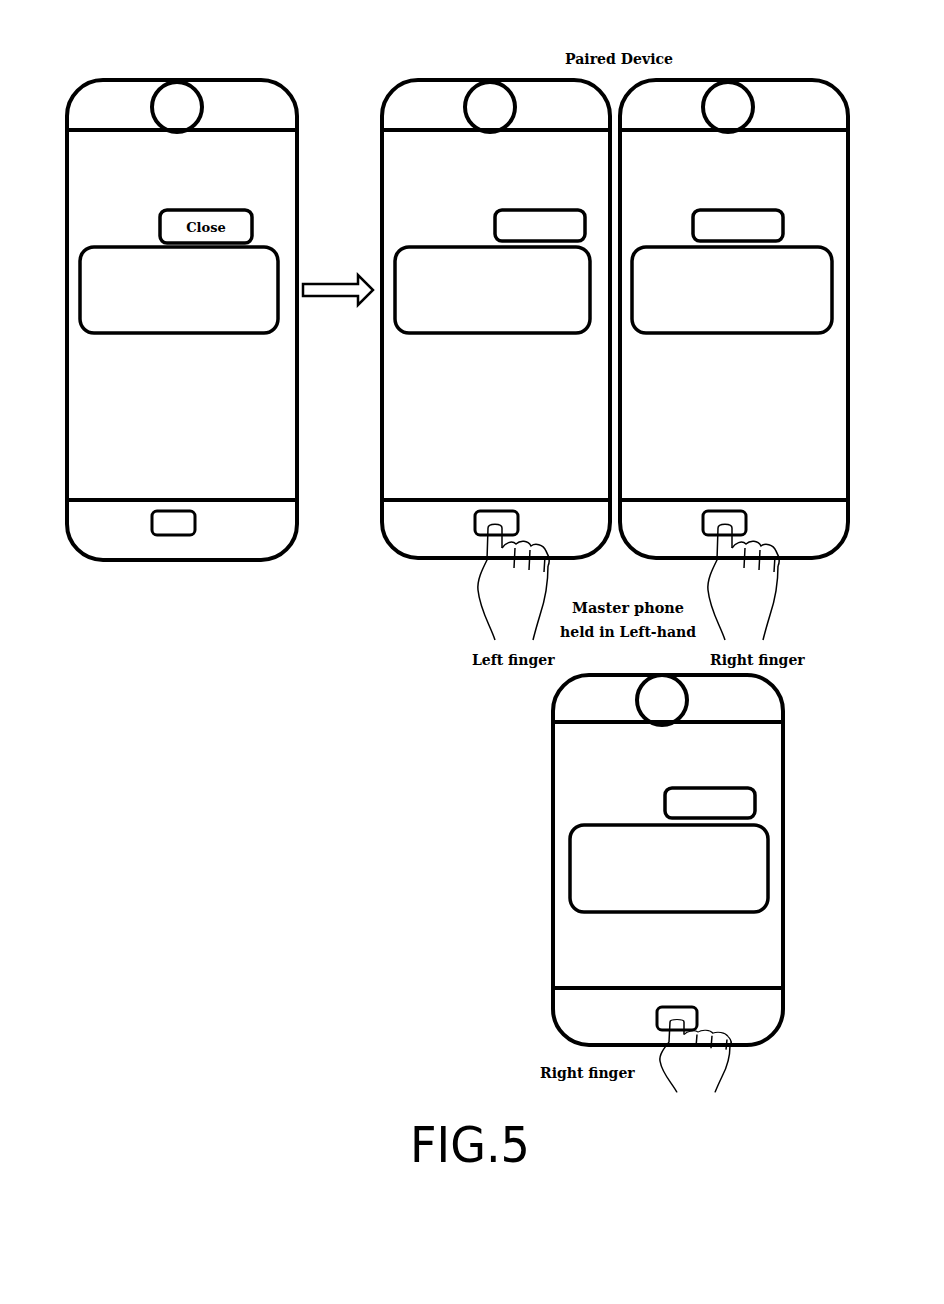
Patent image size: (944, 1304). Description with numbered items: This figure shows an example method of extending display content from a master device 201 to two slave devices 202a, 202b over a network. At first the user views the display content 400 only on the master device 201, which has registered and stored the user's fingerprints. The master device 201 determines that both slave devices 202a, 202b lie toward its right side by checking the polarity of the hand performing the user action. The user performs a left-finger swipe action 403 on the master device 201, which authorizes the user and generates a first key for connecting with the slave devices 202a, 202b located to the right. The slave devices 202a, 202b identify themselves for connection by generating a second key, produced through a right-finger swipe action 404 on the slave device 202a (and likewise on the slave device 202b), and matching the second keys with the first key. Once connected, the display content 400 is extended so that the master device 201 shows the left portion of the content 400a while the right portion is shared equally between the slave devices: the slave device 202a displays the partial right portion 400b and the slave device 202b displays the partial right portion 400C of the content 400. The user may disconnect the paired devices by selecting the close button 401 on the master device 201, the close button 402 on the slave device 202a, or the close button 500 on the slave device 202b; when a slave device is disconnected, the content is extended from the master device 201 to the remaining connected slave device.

The master device 201 is at (498, 24).
The display content 400 is at (257, 247).
The left portion of the content 400a is at (448, 247).
The close button 401 is at (563, 210).
The close button 402 is at (740, 210).
The partial right portion of the content 400b is at (790, 247).
The slave device 202a is at (773, 24).
The left-finger swipe action 403 is at (489, 534).
The right-finger swipe action 404 is at (746, 524).
The slave device 202b is at (636, 700).
The close button 500 is at (665, 800).
The partial right portion of the content 400C is at (570, 863).